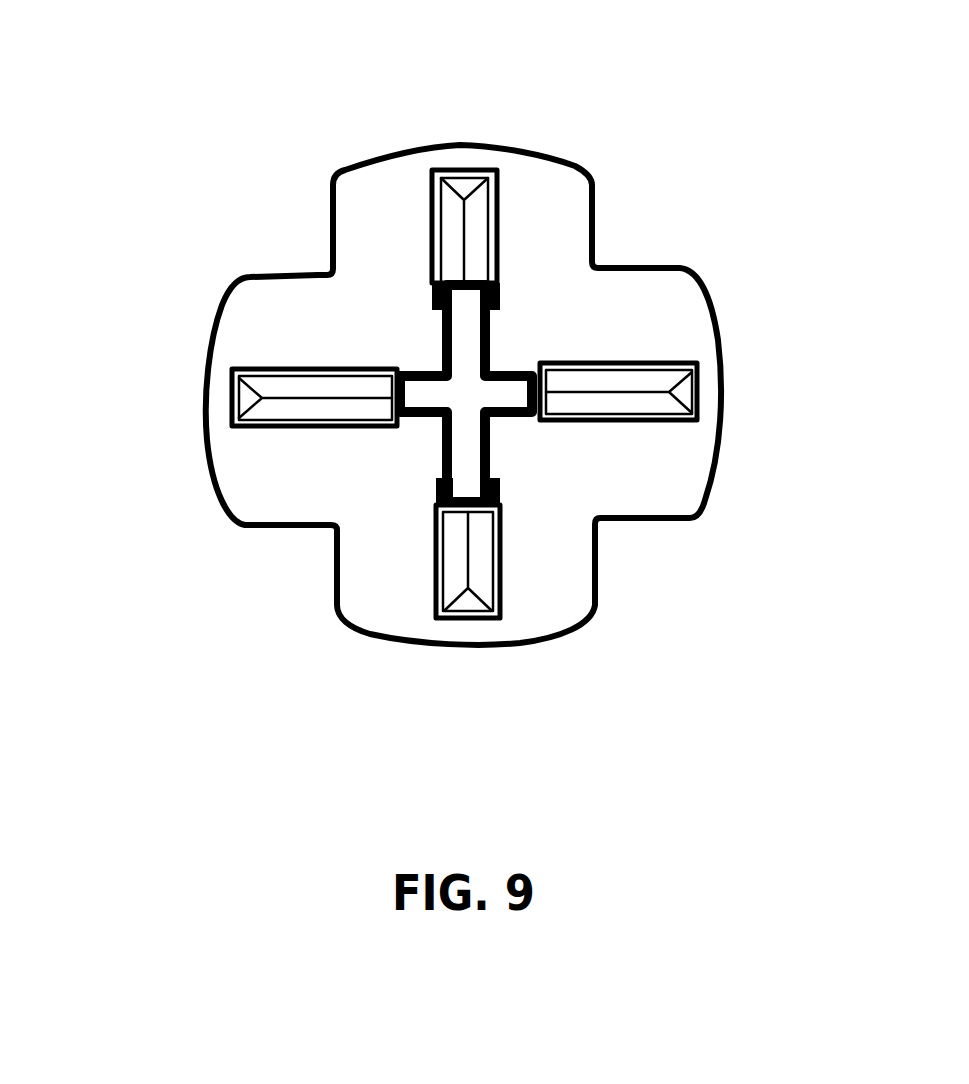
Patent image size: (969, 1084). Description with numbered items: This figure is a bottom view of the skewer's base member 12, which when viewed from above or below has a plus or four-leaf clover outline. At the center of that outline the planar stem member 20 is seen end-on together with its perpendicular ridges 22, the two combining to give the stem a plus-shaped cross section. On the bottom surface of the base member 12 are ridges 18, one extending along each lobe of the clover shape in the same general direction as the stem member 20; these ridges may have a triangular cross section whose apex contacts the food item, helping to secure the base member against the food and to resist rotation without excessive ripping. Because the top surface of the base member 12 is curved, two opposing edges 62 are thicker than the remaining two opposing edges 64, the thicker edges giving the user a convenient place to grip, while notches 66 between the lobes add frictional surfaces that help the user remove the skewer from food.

The base member 12 is at (339, 172).
The ridges 18 is at (475, 215).
The stem member 20 is at (470, 345).
The perpendicular ridges 22 is at (410, 378).
The thicker edges 62 is at (720, 345).
The edges 64 is at (490, 145).
The notches 66 is at (322, 265).